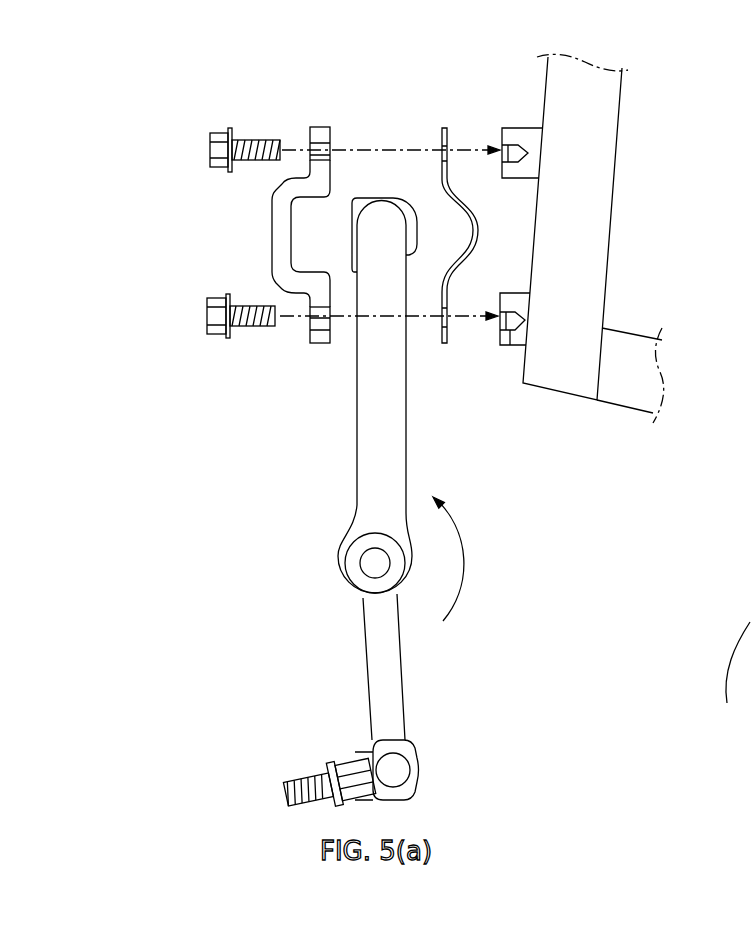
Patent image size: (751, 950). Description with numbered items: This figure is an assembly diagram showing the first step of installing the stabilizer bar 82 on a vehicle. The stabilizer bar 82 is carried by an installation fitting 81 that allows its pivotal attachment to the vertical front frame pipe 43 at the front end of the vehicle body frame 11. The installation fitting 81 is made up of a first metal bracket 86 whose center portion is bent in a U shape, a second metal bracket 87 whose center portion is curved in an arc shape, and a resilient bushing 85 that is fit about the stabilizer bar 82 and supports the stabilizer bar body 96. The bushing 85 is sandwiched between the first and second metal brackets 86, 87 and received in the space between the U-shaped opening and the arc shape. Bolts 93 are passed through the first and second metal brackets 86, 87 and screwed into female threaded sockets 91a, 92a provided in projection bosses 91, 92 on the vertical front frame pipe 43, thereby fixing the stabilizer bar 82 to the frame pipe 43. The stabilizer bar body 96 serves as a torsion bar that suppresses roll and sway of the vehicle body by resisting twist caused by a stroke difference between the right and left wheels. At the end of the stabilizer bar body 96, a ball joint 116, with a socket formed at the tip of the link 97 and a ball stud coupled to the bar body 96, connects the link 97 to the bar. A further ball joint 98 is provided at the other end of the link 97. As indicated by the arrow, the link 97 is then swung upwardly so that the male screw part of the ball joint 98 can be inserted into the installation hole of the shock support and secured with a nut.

The vehicle body frame 11 is at (623, 122).
The vertical front frame pipe 43 is at (613, 209).
The installation fitting 81 is at (736, 681).
The stabilizer bar 82 is at (298, 337).
The resilient bushing 85 is at (380, 198).
The first metal bracket 86 is at (272, 233).
The second metal bracket 87 is at (480, 208).
The projection boss 91 is at (494, 109).
The female threaded socket 91a is at (502, 150).
The projection boss 92 is at (504, 391).
The female threaded socket 92a is at (505, 347).
The bolt 93 is at (210, 143).
The stabilizer bar body 96 is at (355, 391).
The link 97 is at (367, 672).
The ball joint 98 is at (417, 796).
The ball joint 116 is at (341, 554).